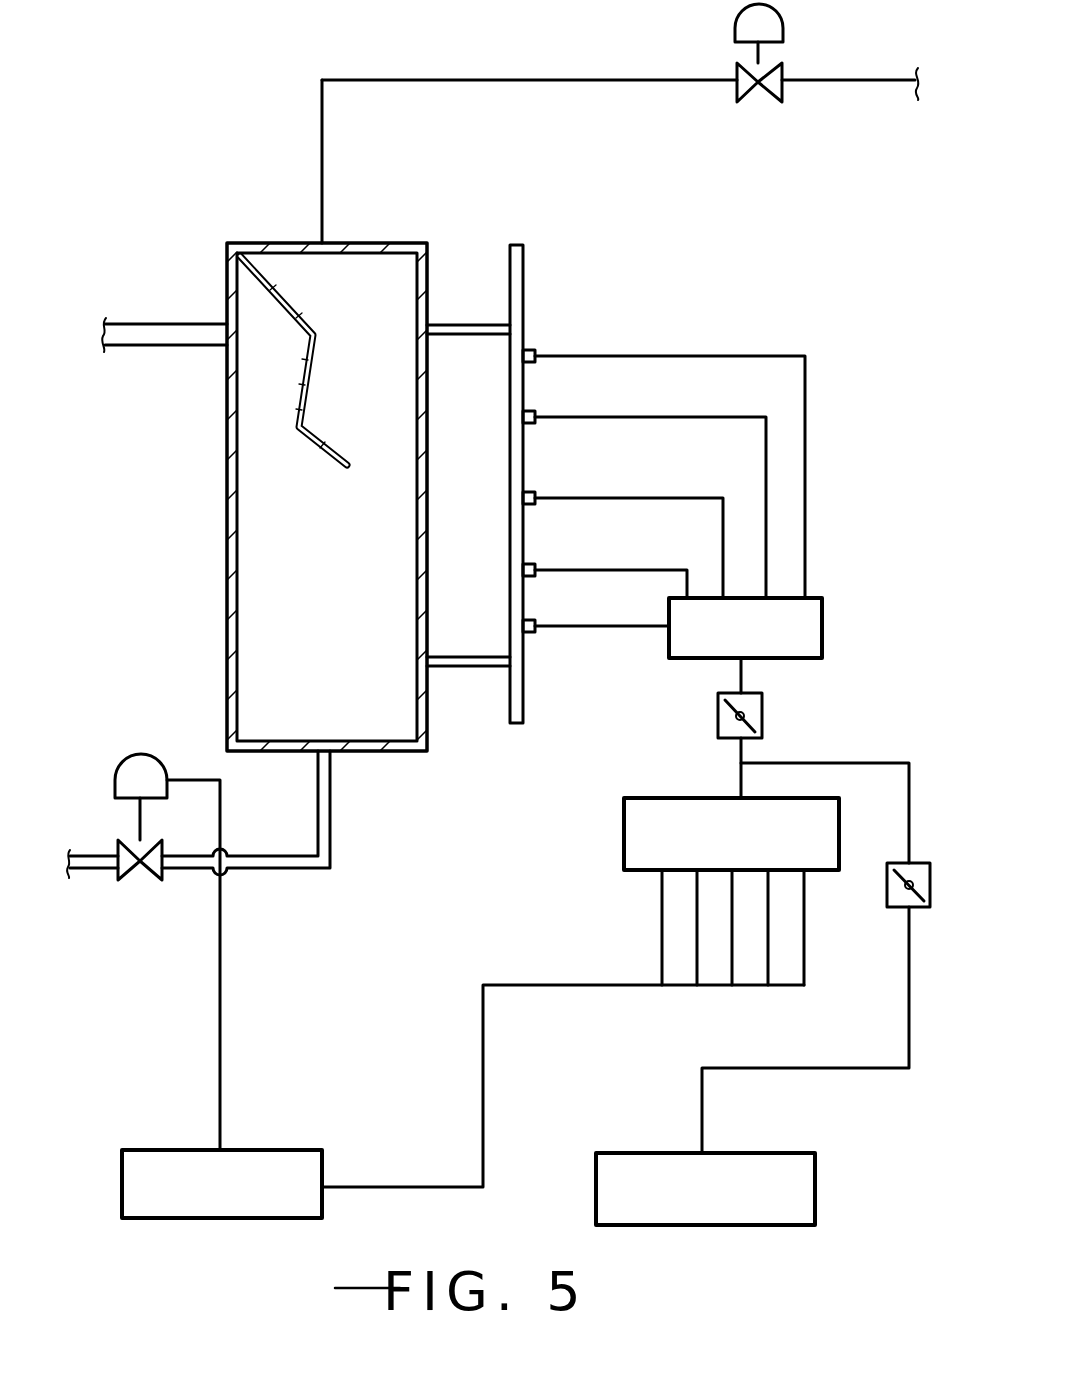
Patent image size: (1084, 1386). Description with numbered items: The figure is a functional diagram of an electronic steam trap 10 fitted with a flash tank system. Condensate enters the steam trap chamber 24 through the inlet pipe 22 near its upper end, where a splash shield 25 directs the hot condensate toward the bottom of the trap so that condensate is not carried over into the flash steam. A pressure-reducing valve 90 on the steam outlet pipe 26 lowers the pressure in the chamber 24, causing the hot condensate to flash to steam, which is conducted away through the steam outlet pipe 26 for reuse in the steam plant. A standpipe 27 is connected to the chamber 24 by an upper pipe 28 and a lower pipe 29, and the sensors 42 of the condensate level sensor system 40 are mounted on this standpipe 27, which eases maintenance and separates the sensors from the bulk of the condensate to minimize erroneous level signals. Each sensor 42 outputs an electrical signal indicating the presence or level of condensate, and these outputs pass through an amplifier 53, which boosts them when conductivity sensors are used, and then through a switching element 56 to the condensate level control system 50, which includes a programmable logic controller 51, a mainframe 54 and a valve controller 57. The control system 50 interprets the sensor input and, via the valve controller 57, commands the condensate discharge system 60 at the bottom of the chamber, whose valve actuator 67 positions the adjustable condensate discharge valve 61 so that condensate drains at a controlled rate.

The proactive electronic steam trap 10 is at (663, 250).
The inlet pipe 22 is at (152, 348).
The steam trap chamber 24 is at (331, 541).
The splash shield 25 is at (268, 282).
The steam outlet pipe 26 is at (528, 80).
The standpipe 27 is at (523, 284).
The upper pipe 28 is at (455, 323).
The lower pipe 29 is at (453, 655).
The condensate level sensor system 40 is at (701, 508).
The sensor 42 is at (531, 410).
The condensate level control system 50 is at (607, 954).
The programmable logic controller 51 is at (840, 826).
The amplifier 53 is at (830, 596).
The mainframe 54 is at (815, 1192).
The switch 56 is at (762, 712).
The valve controller 57 is at (305, 1150).
The condensate discharge system 60 is at (148, 812).
The condensate discharge valve 61 is at (128, 878).
The valve actuator 67 is at (157, 763).
The pressure-reducing valve 90 is at (768, 98).